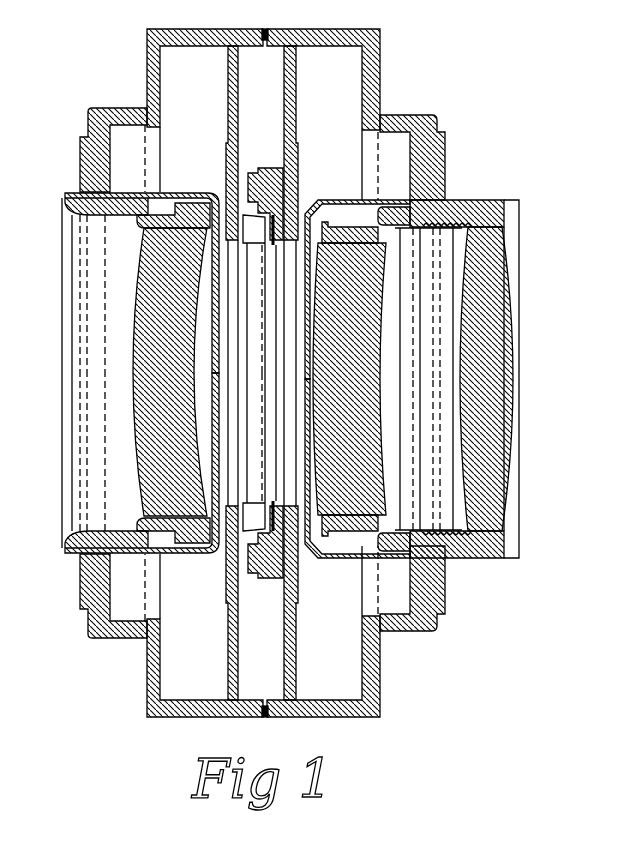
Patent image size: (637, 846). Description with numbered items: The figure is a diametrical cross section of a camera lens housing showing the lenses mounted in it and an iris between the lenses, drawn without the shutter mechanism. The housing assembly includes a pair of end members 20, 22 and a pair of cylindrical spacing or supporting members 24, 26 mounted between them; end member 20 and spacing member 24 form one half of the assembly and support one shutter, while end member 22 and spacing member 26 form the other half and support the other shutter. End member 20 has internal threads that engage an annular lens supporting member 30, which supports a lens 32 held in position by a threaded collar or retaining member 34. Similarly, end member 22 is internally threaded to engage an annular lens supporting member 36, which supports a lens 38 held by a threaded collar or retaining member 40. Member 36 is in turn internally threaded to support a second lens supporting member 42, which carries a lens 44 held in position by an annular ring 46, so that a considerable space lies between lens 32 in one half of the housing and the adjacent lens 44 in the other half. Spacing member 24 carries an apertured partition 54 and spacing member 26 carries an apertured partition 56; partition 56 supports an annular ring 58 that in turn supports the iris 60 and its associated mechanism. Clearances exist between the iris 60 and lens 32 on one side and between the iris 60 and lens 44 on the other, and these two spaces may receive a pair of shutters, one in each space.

The end member 20 is at (86, 112).
The end member 22 is at (437, 119).
The cylindrical spacing or supporting member 24 is at (200, 36).
The cylindrical spacing or supporting member 26 is at (338, 43).
The annular lens supporting member 30 is at (64, 193).
The lens 32 is at (146, 238).
The threaded collar or retaining member 34 is at (198, 206).
The annular lens supporting member 36 is at (520, 202).
The lens 38 is at (492, 256).
The threaded collar or retaining member 40 is at (450, 556).
The second lens supporting member 42 is at (371, 548).
The lens 44 is at (338, 234).
The annular ring 46 is at (317, 203).
The apertured partition 54 is at (228, 122).
The apertured partition 56 is at (298, 118).
The annular ring 58 is at (264, 170).
The iris 60 is at (272, 252).